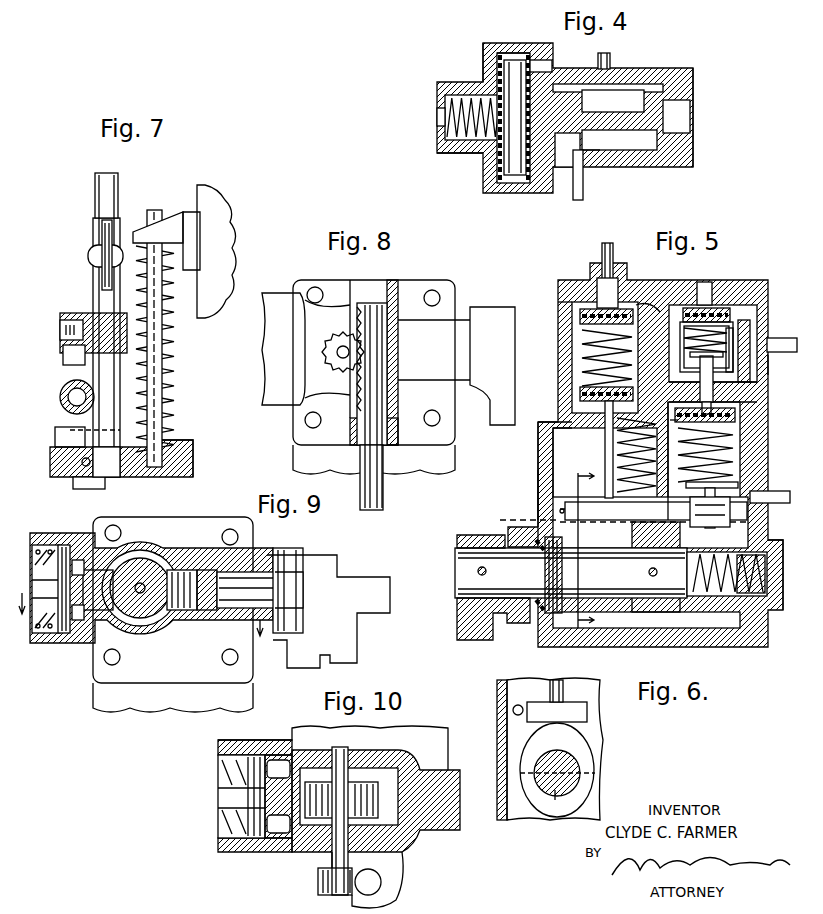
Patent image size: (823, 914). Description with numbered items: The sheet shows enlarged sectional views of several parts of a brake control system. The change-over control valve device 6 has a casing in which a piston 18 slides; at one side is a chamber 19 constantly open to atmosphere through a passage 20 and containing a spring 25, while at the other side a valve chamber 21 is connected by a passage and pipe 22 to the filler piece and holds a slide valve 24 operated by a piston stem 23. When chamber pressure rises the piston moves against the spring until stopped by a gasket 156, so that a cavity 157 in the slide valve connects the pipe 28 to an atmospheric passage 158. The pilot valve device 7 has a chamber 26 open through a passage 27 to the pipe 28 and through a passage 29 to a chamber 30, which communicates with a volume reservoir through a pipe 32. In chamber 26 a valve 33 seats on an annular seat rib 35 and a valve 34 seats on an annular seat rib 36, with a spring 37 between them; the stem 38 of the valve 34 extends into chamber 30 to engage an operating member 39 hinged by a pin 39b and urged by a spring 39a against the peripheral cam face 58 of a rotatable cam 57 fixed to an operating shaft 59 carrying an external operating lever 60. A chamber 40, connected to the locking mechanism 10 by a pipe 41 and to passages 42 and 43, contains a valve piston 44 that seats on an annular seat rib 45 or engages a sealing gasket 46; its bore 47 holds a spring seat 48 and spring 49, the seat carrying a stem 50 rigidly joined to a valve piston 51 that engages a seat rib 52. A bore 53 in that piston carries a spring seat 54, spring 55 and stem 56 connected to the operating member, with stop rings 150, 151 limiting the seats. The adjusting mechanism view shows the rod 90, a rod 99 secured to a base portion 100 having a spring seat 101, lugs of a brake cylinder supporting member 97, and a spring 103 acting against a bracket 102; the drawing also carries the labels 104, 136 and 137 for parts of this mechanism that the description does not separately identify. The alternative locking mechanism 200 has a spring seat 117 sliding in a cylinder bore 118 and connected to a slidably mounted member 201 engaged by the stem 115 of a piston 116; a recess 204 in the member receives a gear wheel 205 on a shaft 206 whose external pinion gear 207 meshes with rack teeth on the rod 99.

In FIG. 4, the change-over control valve device 6 is at (680, 68).
In FIG. 5, the change-over control valve device 6 is at (591, 552).
In FIG. 5, the pilot valve device 7 is at (532, 494).
In FIG. 6, the pilot valve device 7 is at (486, 693).
In FIG. 9, the locking mechanism 10 is at (144, 626).
In FIG. 4, the piston 18 is at (515, 52).
In FIG. 4, the chamber 19 is at (480, 78).
In FIG. 4, the passage 20 is at (436, 115).
In FIG. 4, the valve chamber 21 is at (650, 85).
In FIG. 4, the passage and pipe 22 is at (610, 60).
In FIG. 9, the passage and pipe 22 is at (40, 640).
In FIG. 4, the piston stem 23 is at (688, 110).
In FIG. 4, the slide valve 24 is at (650, 92).
In FIG. 4, the spring 25 is at (470, 140).
In FIG. 5, the chamber 26 is at (572, 297).
In FIG. 5, the passage 27 is at (592, 275).
In FIG. 4, the pipe 28 is at (573, 190).
In FIG. 5, the pipe 28 is at (600, 252).
In FIG. 5, the passage 29 is at (598, 432).
In FIG. 5, the chamber 30 is at (545, 470).
In FIG. 5, the pipe 32 is at (770, 503).
In FIG. 5, the valve 33 is at (580, 315).
In FIG. 5, the valve 34 is at (585, 393).
In FIG. 5, the annular seat rib 35 is at (653, 317).
In FIG. 5, the annular seat rib 36 is at (604, 445).
In FIG. 5, the spring 37 is at (582, 342).
In FIG. 5, the stem 38 is at (553, 447).
In FIG. 6, the stem 38 is at (565, 678).
In FIG. 5, the operating member 39 is at (615, 512).
In FIG. 6, the operating member 39 is at (540, 720).
In FIG. 5, the spring 39a is at (612, 462).
In FIG. 5, the pin 39b is at (510, 518).
In FIG. 6, the pin 39b is at (512, 710).
In FIG. 5, the chamber 40 is at (735, 327).
In FIG. 5, the pipe 41 is at (770, 360).
In FIG. 9, the pipe 41 is at (358, 567).
In FIG. 5, the passage 42 is at (708, 300).
In FIG. 5, the passage 43 is at (757, 396).
In FIG. 5, the valve piston 44 is at (745, 305).
In FIG. 5, the annular seat rib 45 is at (695, 300).
In FIG. 5, the sealing gasket 46 is at (702, 395).
In FIG. 5, the bore 47 is at (685, 340).
In FIG. 5, the spring seat 48 is at (700, 360).
In FIG. 5, the spring 49 is at (793, 347).
In FIG. 5, the stem 50 is at (680, 405).
In FIG. 5, the valve piston 51 is at (738, 420).
In FIG. 5, the seat rib 52 is at (688, 418).
In FIG. 5, the bore 53 is at (735, 440).
In FIG. 5, the spring seat 54 is at (740, 470).
In FIG. 5, the spring 55 is at (700, 493).
In FIG. 5, the stem 56 is at (735, 498).
In FIG. 5, the rotatable cam 57 is at (630, 607).
In FIG. 6, the rotatable cam 57 is at (585, 758).
In FIG. 6, the peripheral cam face 58 is at (590, 740).
In FIG. 5, the operating shaft 59 is at (523, 580).
In FIG. 6, the operating shaft 59 is at (552, 795).
In FIG. 5, the operating lever 60 is at (460, 613).
In FIG. 7, the rod 90 is at (60, 392).
In FIG. 7, the brake cylinder supporting member 97 is at (120, 480).
In FIG. 7, the rod 99 is at (100, 305).
In FIG. 8, the rod 99 is at (375, 478).
In FIG. 10, the rod 99 is at (382, 881).
In FIG. 7, the base portion 100 is at (85, 470).
In FIG. 7, the spring seat 101 is at (172, 470).
In FIG. 7, the bracket 102 is at (175, 210).
In FIG. 7, the spring 103 is at (175, 410).
In FIG. 7, the nut 104 is at (100, 240).
In FIG. 9, the stem 115 is at (290, 575).
In FIG. 9, the piston 116 is at (305, 568).
In FIG. 9, the spring seat 117 is at (66, 636).
In FIG. 10, the spring seat 117 is at (252, 840).
In FIG. 9, the cylinder bore 118 is at (62, 540).
In FIG. 7, the block 136 is at (58, 437).
In FIG. 7, the latch 137 is at (62, 352).
In FIG. 5, the stop ring 150 is at (780, 490).
In FIG. 5, the stop ring 151 is at (735, 370).
In FIG. 4, the gasket 156 is at (510, 86).
In FIG. 4, the cavity 157 is at (625, 142).
In FIG. 4, the atmospheric passage 158 is at (598, 162).
In FIG. 8, the locking mechanism 200 is at (438, 368).
In FIG. 9, the locking mechanism 200 is at (250, 553).
In FIG. 10, the locking mechanism 200 is at (250, 740).
In FIG. 9, the slidably mounted member 201 is at (110, 565).
In FIG. 10, the slidably mounted member 201 is at (270, 835).
In FIG. 9, the recess 204 is at (170, 570).
In FIG. 10, the recess 204 is at (385, 777).
In FIG. 9, the gear wheel 205 is at (178, 612).
In FIG. 10, the gear wheel 205 is at (420, 830).
In FIG. 8, the shaft 206 is at (338, 362).
In FIG. 9, the shaft 206 is at (132, 615).
In FIG. 10, the shaft 206 is at (348, 843).
In FIG. 8, the pinion gear 207 is at (333, 352).
In FIG. 10, the pinion gear 207 is at (320, 880).